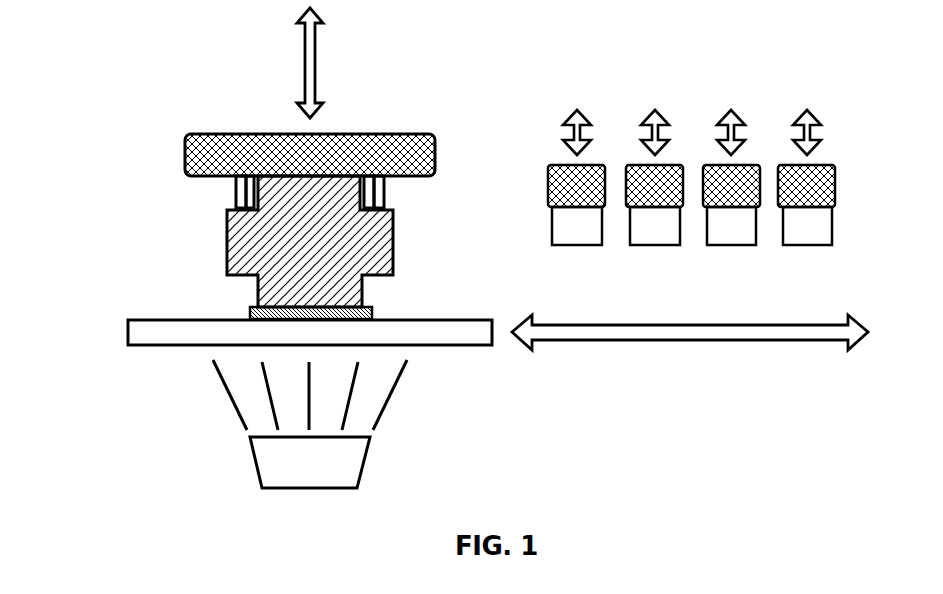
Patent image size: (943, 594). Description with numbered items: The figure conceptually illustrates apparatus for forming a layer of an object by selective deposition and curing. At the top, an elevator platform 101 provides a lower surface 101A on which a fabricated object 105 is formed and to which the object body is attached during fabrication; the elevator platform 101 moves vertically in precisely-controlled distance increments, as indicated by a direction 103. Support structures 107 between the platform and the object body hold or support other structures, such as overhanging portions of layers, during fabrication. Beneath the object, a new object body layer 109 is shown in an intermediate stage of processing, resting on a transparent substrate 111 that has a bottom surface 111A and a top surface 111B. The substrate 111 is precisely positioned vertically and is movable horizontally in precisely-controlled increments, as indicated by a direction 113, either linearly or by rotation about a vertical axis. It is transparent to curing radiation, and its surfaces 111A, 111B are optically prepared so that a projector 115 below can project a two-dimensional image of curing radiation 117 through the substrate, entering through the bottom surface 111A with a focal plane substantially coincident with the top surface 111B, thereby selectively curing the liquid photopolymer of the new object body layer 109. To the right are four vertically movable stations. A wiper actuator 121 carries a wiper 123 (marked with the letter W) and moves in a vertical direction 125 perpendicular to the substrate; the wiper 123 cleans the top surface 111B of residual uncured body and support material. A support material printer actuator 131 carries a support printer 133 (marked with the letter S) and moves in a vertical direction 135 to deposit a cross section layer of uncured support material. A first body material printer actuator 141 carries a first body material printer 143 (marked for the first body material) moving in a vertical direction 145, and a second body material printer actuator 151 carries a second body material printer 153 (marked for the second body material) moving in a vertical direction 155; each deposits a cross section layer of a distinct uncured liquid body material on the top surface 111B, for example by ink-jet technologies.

The elevator platform 101 is at (218, 133).
The lower surface 101A is at (400, 177).
The direction 103 is at (305, 63).
The fabricated object 105 is at (227, 243).
The support structures 107 is at (233, 203).
The new object body layer 109 is at (247, 317).
The transparent substrate 111 is at (128, 332).
The bottom surface 111A is at (435, 345).
The top surface 111B is at (435, 320).
The direction 113 is at (655, 339).
The projector 115 is at (250, 445).
The curing radiation 117 is at (203, 385).
The wiper actuator 121 is at (548, 187).
The wiper 123 is at (575, 245).
The vertical direction 125 is at (565, 132).
The support material printer actuator 131 is at (626, 187).
The support printer 133 is at (653, 245).
The vertical direction 135 is at (643, 132).
The first body material printer actuator 141 is at (703, 187).
The first body material printer 143 is at (729, 245).
The vertical direction 145 is at (719, 132).
The second body material printer actuator 151 is at (778, 187).
The second body material printer 153 is at (805, 245).
The vertical direction 155 is at (795, 132).